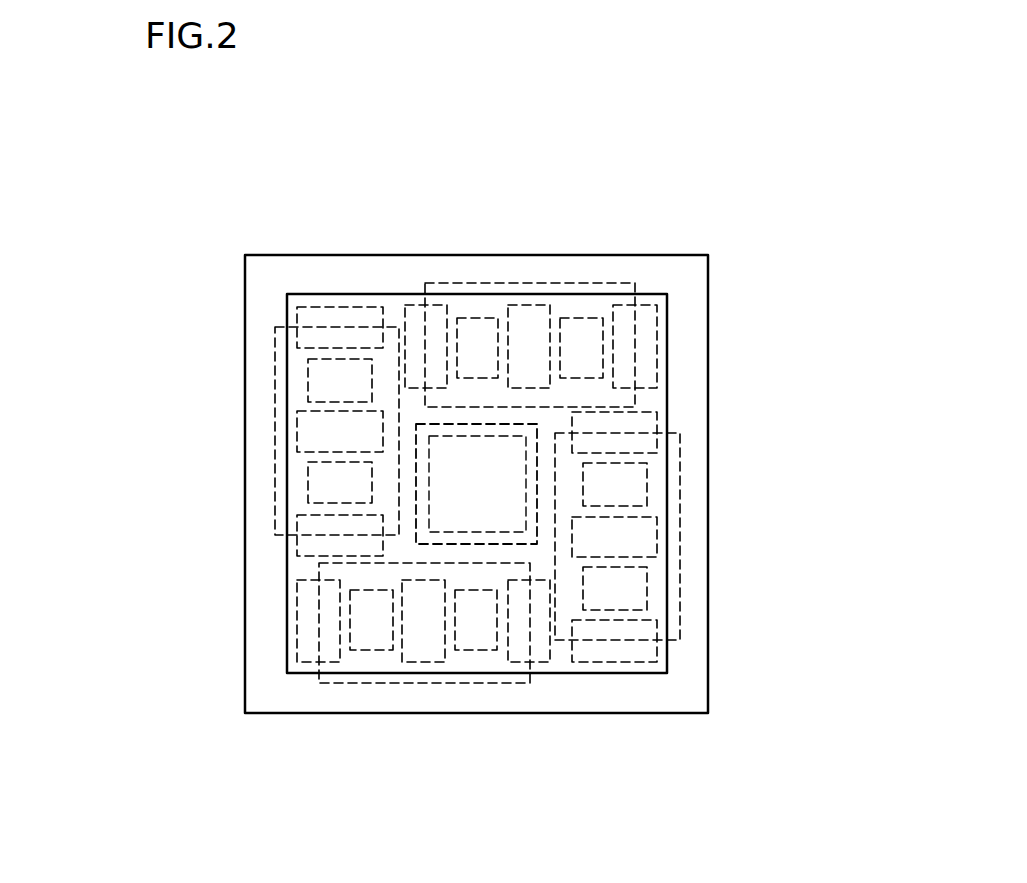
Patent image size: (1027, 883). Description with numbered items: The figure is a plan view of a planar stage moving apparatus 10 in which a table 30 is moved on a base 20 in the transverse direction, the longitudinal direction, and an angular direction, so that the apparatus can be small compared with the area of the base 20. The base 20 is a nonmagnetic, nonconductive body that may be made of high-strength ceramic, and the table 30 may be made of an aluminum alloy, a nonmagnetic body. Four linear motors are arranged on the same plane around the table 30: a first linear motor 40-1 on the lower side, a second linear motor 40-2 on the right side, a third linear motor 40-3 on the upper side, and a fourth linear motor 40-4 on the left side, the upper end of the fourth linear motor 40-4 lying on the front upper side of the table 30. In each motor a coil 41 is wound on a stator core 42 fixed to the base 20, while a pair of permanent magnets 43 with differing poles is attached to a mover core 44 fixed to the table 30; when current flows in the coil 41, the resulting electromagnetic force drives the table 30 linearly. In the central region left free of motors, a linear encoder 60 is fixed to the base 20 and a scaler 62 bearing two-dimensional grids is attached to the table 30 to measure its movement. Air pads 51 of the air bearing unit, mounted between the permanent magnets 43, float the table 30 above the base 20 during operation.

The planar stage moving apparatus 10 is at (186, 295).
The base 20 is at (693, 410).
The table 30 is at (663, 358).
The first linear motor 40-1 is at (420, 827).
The second linear motor 40-2 is at (865, 543).
The third linear motor 40-3 is at (707, 182).
The fourth linear motor 40-4 is at (92, 377).
The coil 41 is at (475, 504).
The stator core 42 is at (525, 283).
The permanent magnet 43 is at (477, 504).
The mover core 44 is at (593, 315).
The air pad 51 is at (655, 535).
The linear encoder 60 is at (452, 424).
The scaler 62 is at (487, 436).